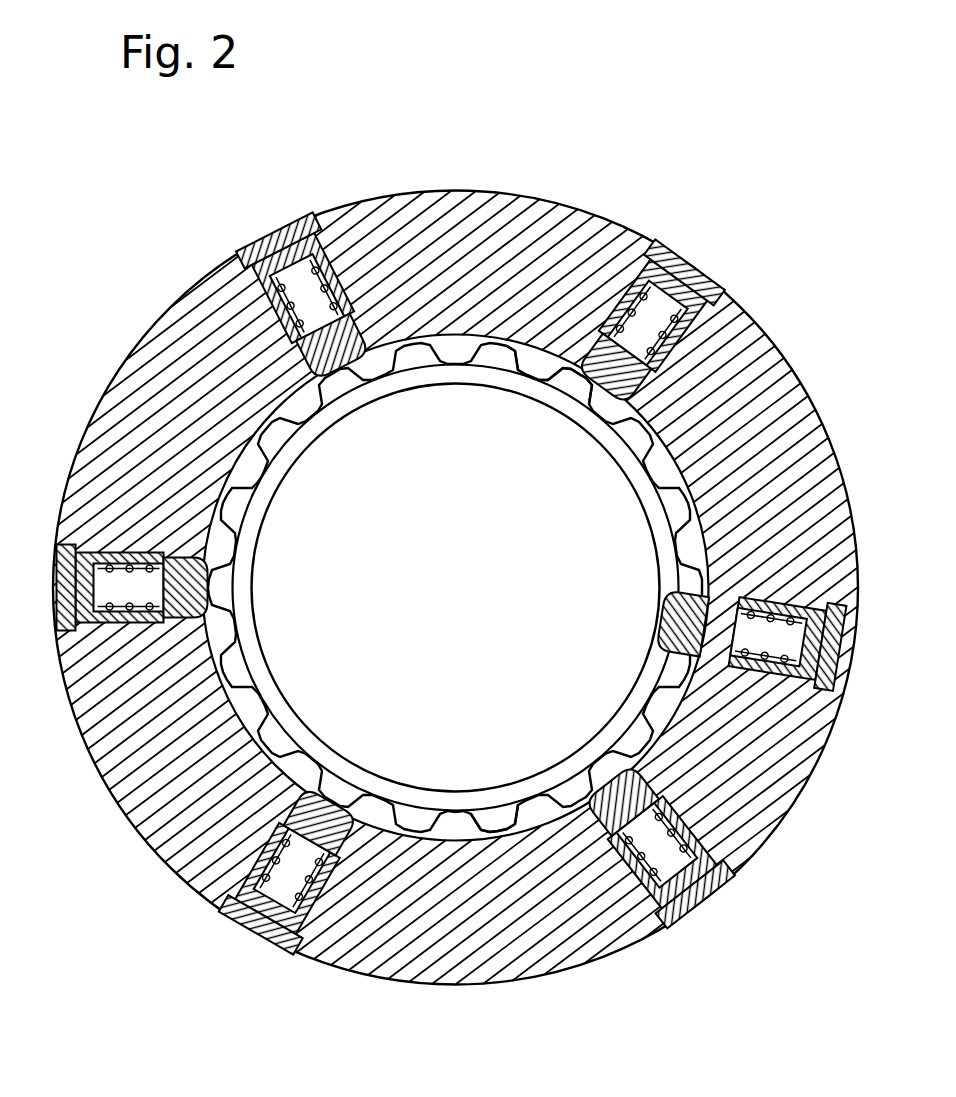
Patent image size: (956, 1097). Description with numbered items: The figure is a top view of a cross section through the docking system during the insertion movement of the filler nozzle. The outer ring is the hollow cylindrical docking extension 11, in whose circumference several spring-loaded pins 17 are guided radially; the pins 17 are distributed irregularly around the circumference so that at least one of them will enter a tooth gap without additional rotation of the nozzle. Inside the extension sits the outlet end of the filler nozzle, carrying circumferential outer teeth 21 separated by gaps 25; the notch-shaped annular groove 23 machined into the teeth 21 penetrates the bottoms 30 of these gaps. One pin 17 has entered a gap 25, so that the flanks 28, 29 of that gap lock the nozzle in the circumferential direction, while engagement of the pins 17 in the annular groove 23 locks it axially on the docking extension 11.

The docking extension 11 is at (176, 352).
The pin 17 is at (678, 630).
The circumferential outer teeth 21 is at (493, 797).
The annular groove 23 is at (212, 500).
The gap in the teeth 25 is at (460, 354).
The flank of the gap 28 is at (556, 372).
The flank of the gap 29 is at (522, 362).
The bottom of the gap in the teeth 30 is at (762, 390).